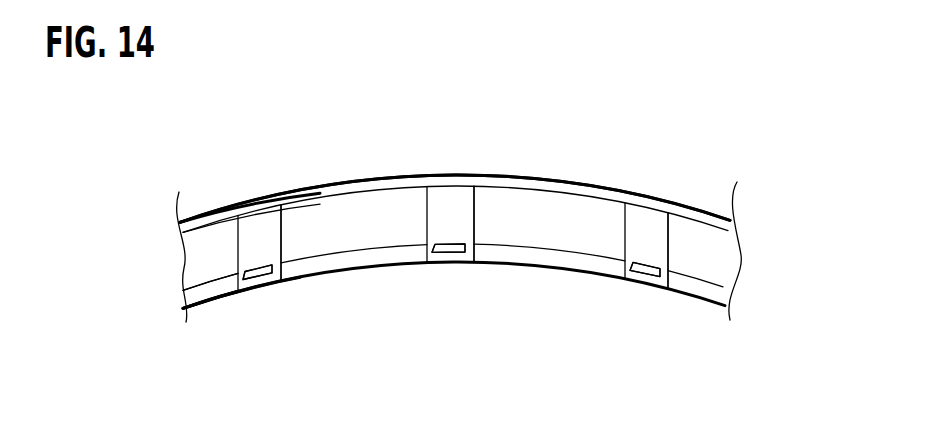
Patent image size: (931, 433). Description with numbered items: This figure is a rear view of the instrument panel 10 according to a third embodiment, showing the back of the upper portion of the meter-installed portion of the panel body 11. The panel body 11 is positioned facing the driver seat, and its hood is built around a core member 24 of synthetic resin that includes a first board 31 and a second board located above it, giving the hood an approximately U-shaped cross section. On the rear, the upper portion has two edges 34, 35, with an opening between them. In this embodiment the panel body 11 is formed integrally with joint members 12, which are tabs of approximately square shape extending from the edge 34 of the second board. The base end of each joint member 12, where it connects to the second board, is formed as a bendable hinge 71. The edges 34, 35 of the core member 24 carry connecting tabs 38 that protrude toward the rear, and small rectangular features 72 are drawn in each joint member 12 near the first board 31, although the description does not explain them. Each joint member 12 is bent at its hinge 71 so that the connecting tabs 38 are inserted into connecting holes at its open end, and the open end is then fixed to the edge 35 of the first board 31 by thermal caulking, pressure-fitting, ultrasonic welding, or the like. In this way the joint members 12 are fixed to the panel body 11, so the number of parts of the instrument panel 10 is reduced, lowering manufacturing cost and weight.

The instrument panel 10 is at (289, 112).
The panel body 11 is at (728, 196).
The joint member 12 is at (275, 238).
The core member 24 is at (185, 295).
The first board 31 is at (190, 297).
The edge 34 is at (203, 222).
The edge 35 is at (215, 293).
The connecting tab 38 is at (267, 271).
The hinge 71 is at (258, 210).
The tab 72 is at (238, 280).